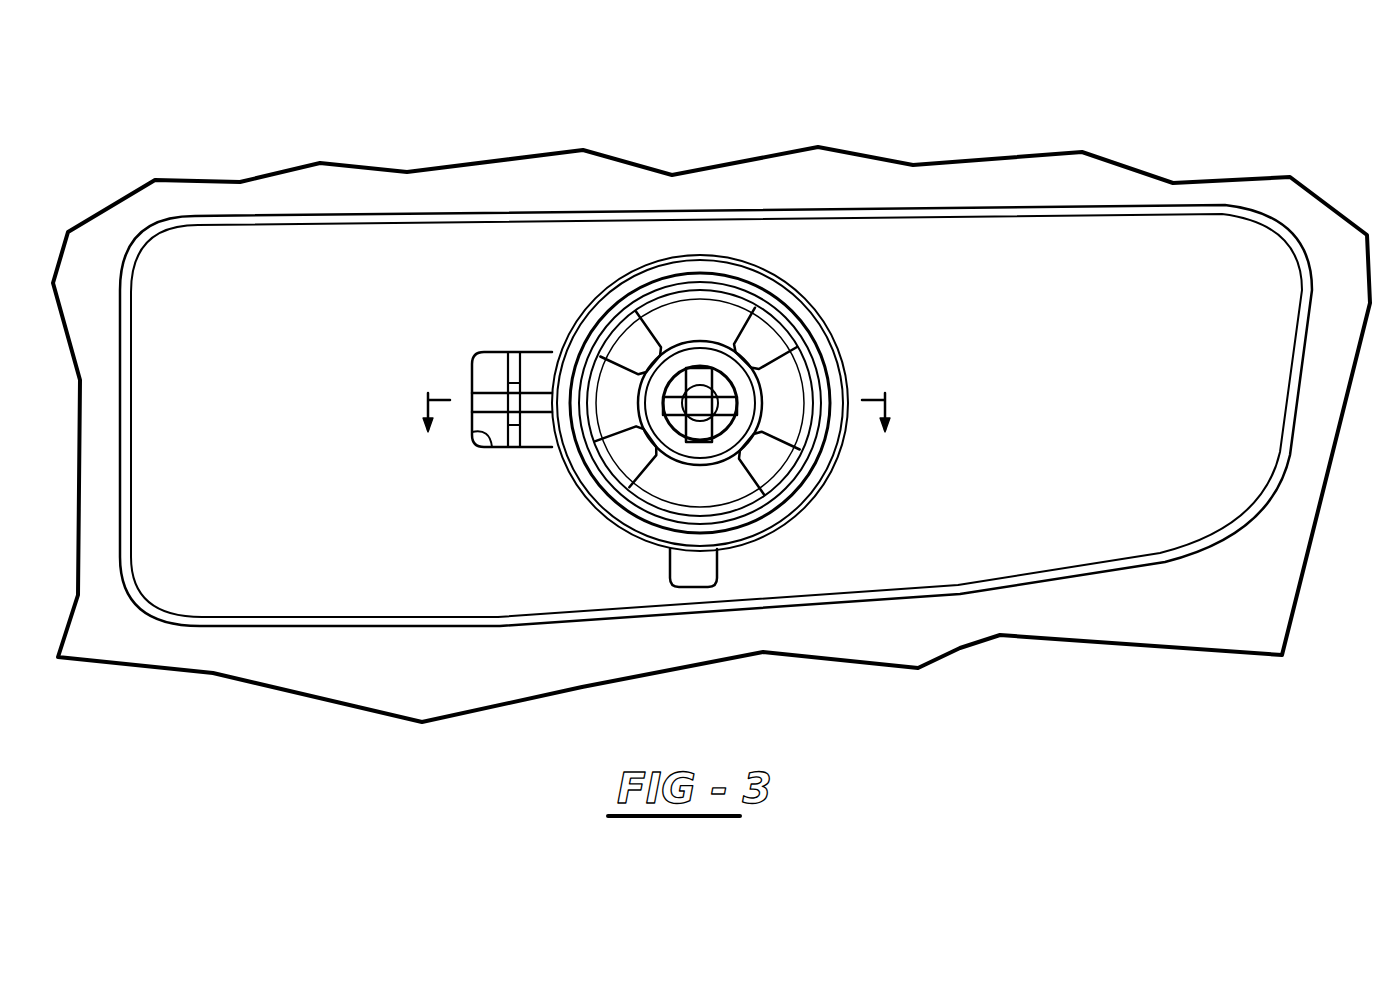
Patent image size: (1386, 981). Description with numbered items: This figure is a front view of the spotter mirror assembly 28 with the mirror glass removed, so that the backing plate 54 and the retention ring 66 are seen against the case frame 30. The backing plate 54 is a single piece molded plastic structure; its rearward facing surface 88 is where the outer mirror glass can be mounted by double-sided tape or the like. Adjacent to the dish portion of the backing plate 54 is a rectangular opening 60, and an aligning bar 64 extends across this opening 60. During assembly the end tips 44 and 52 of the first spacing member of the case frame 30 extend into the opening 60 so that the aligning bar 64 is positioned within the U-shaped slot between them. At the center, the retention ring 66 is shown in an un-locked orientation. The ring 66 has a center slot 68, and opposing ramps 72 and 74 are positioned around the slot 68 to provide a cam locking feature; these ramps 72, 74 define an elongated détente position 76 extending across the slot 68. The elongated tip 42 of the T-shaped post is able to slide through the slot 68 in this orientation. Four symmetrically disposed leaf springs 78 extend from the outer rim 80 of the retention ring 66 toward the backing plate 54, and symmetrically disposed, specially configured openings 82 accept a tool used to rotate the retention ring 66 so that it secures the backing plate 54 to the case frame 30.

The spotter mirror assembly 28 is at (887, 118).
The case frame 30 is at (193, 180).
The rearward facing surface 88 is at (253, 272).
The backing plate 54 is at (1213, 208).
The elongated tip 42 is at (703, 383).
The elongated détente position 76 is at (697, 393).
The end tip 44 is at (515, 365).
The aligning bar 64 is at (485, 402).
The end tip 52 is at (517, 435).
The rectangular opening 60 is at (483, 440).
The leaf springs 78 is at (622, 347).
The openings 82 is at (728, 327).
The retention ring 66 is at (810, 337).
The outer rim 80 is at (843, 370).
The ramp 72 is at (677, 386).
The center slot 68 is at (702, 423).
The ramp 74 is at (720, 423).